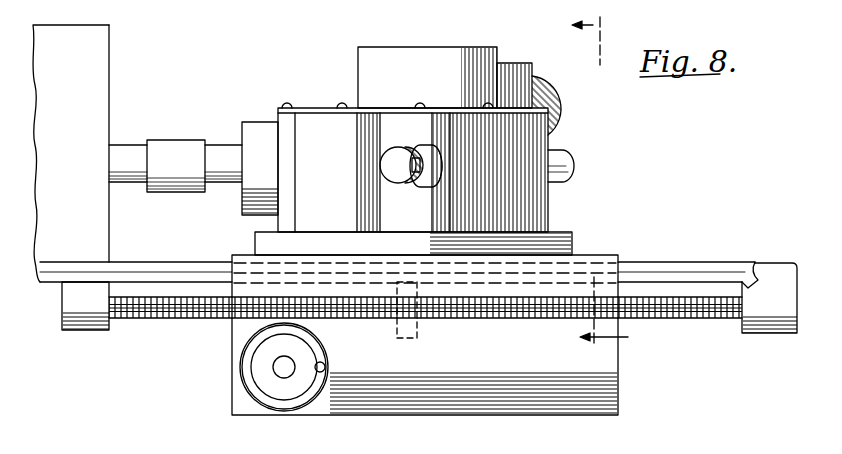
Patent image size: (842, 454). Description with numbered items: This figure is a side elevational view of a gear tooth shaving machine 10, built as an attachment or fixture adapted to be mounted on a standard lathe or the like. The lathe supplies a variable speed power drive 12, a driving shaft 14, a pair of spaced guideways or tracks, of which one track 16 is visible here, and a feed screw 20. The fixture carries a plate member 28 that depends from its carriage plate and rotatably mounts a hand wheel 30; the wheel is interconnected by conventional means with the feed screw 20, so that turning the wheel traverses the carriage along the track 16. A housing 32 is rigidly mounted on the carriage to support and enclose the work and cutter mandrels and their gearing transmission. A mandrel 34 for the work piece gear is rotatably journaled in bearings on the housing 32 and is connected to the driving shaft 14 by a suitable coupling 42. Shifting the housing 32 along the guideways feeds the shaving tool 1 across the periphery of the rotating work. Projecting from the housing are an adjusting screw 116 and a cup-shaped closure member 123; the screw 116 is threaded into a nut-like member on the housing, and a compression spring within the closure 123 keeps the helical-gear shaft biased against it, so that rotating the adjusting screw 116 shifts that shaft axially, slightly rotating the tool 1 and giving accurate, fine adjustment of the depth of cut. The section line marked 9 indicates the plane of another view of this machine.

The shaving tool 1 is at (551, 88).
The section line 9- 9 is at (605, 180).
The shaving machine 10 is at (592, 165).
The variable speed power drive 12 is at (98, 44).
The driving shaft 14 is at (128, 152).
The guideway 16 is at (710, 265).
The feed screw 20 is at (158, 315).
The plate member 28 is at (600, 388).
The hand wheel 30 is at (258, 390).
The housing 32 is at (538, 217).
The mandrel 34 is at (222, 185).
The coupling 42 is at (182, 148).
The adjusting screw 116 is at (410, 146).
The cup-shaped closure member 123 is at (563, 160).